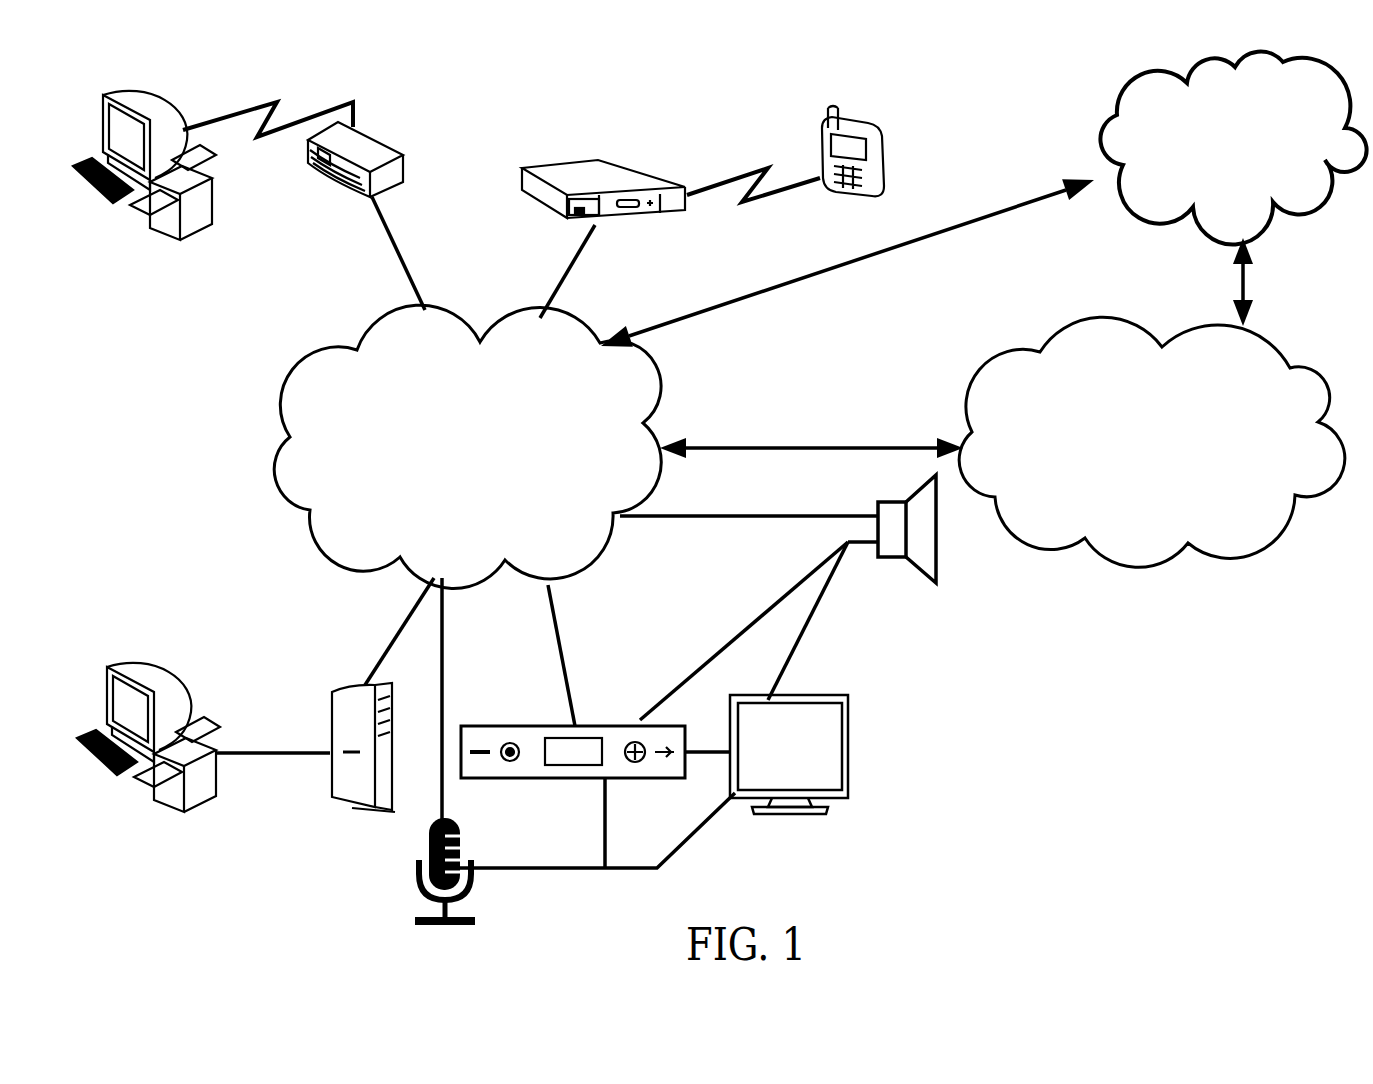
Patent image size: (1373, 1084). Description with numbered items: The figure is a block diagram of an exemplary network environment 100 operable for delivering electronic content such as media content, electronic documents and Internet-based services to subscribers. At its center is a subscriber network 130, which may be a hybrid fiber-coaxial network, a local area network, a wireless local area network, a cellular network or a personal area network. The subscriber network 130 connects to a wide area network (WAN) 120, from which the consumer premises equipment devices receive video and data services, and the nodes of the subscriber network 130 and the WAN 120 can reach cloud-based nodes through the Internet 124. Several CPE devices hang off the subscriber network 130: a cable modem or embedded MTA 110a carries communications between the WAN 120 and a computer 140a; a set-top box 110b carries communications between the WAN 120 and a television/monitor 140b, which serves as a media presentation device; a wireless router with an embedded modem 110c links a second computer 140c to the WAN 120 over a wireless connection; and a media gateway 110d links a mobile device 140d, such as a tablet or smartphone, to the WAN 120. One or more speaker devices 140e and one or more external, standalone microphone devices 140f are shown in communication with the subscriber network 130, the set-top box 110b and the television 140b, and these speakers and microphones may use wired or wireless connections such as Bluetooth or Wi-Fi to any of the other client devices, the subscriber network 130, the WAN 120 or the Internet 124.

The network environment 100 is at (1258, 836).
The modem 110a is at (365, 815).
The set-top box 110b is at (567, 778).
The wireless router including an embedded modem 110c is at (392, 143).
The media gateway 110d is at (618, 155).
The wide area network (WAN) 120 is at (1137, 567).
The Internet 124 is at (1313, 207).
The subscriber network 130 is at (398, 557).
The computer 140a is at (123, 663).
The television/monitor 140b is at (798, 697).
The computer 140c is at (122, 92).
The mobile device 140d is at (880, 128).
The speaker device 140e is at (942, 551).
The microphone device 140f is at (428, 843).